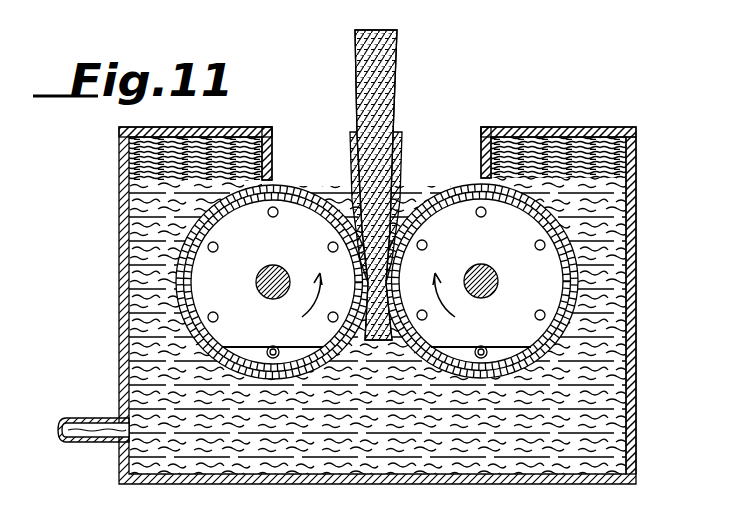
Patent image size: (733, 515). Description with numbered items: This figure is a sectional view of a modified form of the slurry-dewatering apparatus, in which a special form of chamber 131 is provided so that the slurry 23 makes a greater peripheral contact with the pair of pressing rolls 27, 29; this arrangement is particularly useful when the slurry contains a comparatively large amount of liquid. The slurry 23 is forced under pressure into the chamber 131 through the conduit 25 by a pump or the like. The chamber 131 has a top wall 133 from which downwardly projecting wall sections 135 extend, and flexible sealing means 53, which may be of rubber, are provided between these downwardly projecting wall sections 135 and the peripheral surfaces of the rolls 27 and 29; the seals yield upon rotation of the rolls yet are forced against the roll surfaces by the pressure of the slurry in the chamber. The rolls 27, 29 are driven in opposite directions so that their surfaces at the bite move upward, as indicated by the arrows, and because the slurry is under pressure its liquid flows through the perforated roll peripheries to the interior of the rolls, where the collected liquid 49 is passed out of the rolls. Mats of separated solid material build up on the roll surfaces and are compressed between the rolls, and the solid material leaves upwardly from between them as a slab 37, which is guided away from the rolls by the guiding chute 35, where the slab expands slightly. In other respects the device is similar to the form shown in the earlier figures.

The slurry 23 is at (633, 387).
The conduit 25 is at (78, 443).
The pressing roll 27 is at (444, 212).
The pressing roll 29 is at (300, 213).
The guiding chute 35 is at (403, 147).
The slab 37 is at (398, 72).
The liquid 49 is at (499, 351).
The flexible sealing means 53 is at (270, 141).
The chamber 131 is at (633, 295).
The top wall 133 is at (173, 128).
The downwardly projecting wall sections 135 is at (272, 158).